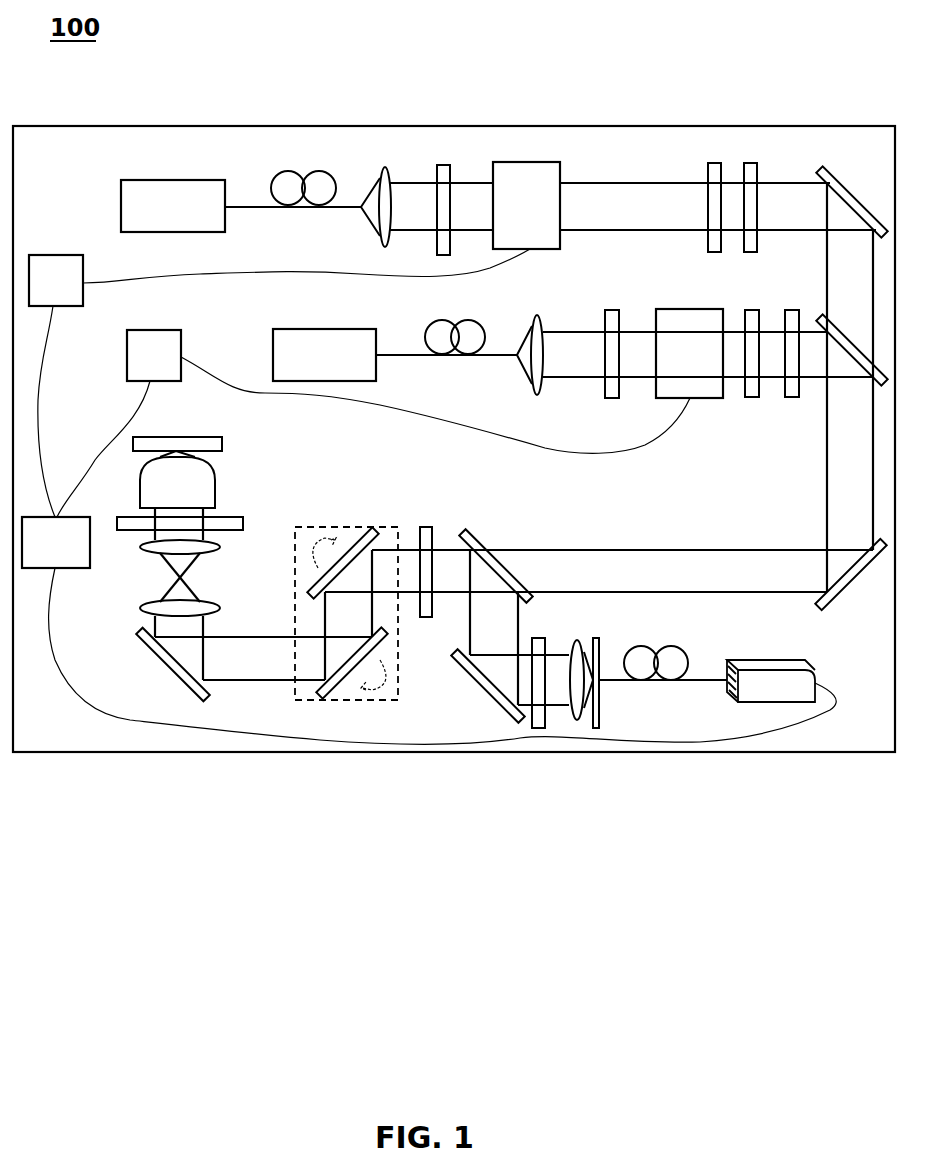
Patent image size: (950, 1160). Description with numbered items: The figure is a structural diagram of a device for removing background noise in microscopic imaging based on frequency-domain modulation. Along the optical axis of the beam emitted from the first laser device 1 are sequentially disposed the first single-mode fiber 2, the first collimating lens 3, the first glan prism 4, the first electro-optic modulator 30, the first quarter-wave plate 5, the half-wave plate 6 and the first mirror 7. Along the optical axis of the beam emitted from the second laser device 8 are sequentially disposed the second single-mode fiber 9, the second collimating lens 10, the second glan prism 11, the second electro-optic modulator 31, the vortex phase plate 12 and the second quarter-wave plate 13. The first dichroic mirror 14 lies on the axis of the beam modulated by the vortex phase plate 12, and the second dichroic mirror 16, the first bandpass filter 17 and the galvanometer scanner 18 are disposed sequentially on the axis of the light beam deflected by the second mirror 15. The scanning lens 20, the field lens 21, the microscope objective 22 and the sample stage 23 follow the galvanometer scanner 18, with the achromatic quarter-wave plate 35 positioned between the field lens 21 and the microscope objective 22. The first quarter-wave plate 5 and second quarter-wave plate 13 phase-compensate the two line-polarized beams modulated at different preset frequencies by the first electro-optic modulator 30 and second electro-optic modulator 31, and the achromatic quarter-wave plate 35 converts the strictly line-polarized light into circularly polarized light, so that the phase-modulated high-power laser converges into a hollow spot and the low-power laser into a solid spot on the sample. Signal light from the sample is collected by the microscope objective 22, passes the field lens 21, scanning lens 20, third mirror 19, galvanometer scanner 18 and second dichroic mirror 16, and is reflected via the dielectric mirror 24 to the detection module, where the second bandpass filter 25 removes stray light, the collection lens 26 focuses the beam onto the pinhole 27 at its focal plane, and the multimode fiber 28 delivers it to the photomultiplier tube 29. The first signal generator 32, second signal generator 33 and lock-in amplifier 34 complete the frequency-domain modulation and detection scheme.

The first laser device 1 is at (173, 206).
The first single-mode fiber 2 is at (303, 175).
The first collimating lens 3 is at (376, 195).
The first glan prism 4 is at (443, 199).
The first quarter-wave plate 5 is at (714, 196).
The half-wave plate 6 is at (750, 196).
The first mirror 7 is at (851, 201).
The second laser device 8 is at (324, 355).
The second single-mode fiber 9 is at (455, 323).
The second collimating lens 10 is at (531, 342).
The second glan prism 11 is at (611, 343).
The 0~2π vortex phase plate 12 is at (750, 342).
The second quarter-wave plate 13 is at (790, 342).
The first dichroic mirror 14 is at (851, 349).
The second mirror 15 is at (850, 574).
The second dichroic mirror 16 is at (496, 563).
The first bandpass filter 17 is at (425, 558).
The galvanometer scanner 18 is at (346, 599).
The third mirror 19 is at (173, 665).
The scanning lens 20 is at (192, 608).
The field lens 21 is at (193, 546).
The microscope objective 22 is at (177, 479).
The sample stage 23 is at (191, 445).
The dielectric mirror 24 is at (488, 686).
The second bandpass filter 25 is at (535, 671).
The collection lens 26 is at (578, 669).
The pinhole 27 is at (609, 683).
The multimode fiber 28 is at (656, 649).
The photomultiplier tube 29 is at (771, 681).
The first electro-optic modulator 30 is at (526, 205).
The second electro-optic modulator 31 is at (689, 353).
The first signal generator 32 is at (56, 280).
The second signal generator 33 is at (154, 355).
The lock-in amplifier 34 is at (56, 542).
The achromatic quarter-wave plate 35 is at (194, 520).